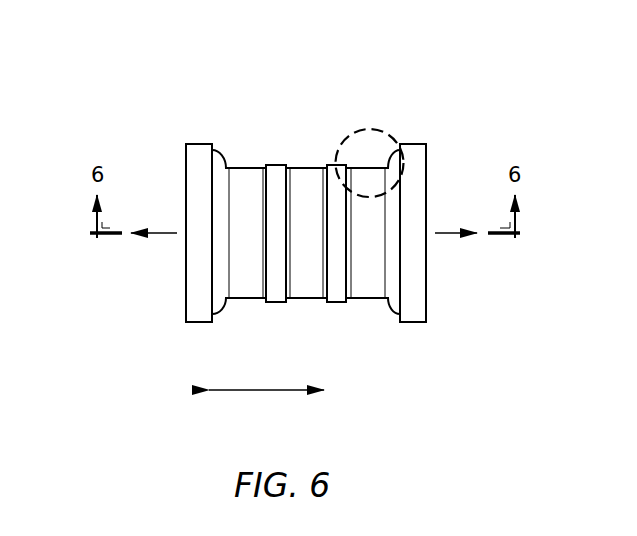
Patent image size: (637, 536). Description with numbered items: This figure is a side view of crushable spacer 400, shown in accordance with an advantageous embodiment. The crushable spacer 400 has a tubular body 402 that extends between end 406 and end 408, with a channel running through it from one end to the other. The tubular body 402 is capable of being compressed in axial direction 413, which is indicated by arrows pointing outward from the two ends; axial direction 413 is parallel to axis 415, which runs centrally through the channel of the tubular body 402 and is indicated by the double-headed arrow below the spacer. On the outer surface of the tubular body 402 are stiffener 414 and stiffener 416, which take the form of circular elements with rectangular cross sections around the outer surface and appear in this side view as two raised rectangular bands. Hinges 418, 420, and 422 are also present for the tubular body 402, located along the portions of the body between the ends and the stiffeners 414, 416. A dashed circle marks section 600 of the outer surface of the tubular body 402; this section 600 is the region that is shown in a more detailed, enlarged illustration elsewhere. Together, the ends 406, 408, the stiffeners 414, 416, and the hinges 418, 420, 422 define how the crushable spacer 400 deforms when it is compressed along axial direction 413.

The crushable spacer 400 is at (230, 82).
The tubular body 402 is at (200, 142).
The end 406 is at (427, 300).
The end 408 is at (187, 310).
The axial direction 413 is at (162, 237).
The stiffener 414 is at (270, 303).
The axis 415 is at (278, 392).
The stiffener 416 is at (330, 303).
The hinge 418 is at (245, 167).
The hinge 420 is at (306, 167).
The hinge 422 is at (368, 290).
The section 600 is at (362, 130).